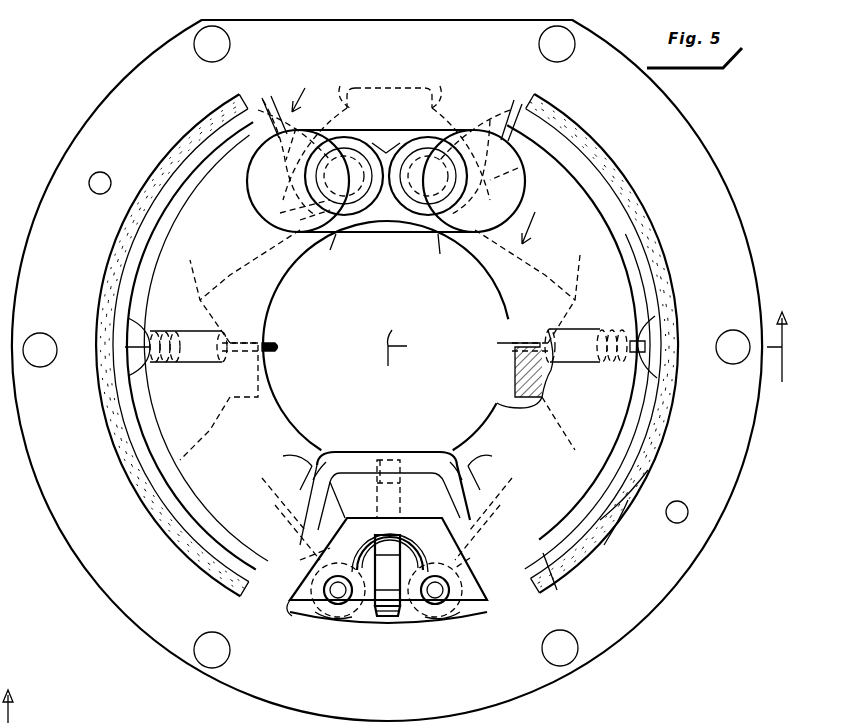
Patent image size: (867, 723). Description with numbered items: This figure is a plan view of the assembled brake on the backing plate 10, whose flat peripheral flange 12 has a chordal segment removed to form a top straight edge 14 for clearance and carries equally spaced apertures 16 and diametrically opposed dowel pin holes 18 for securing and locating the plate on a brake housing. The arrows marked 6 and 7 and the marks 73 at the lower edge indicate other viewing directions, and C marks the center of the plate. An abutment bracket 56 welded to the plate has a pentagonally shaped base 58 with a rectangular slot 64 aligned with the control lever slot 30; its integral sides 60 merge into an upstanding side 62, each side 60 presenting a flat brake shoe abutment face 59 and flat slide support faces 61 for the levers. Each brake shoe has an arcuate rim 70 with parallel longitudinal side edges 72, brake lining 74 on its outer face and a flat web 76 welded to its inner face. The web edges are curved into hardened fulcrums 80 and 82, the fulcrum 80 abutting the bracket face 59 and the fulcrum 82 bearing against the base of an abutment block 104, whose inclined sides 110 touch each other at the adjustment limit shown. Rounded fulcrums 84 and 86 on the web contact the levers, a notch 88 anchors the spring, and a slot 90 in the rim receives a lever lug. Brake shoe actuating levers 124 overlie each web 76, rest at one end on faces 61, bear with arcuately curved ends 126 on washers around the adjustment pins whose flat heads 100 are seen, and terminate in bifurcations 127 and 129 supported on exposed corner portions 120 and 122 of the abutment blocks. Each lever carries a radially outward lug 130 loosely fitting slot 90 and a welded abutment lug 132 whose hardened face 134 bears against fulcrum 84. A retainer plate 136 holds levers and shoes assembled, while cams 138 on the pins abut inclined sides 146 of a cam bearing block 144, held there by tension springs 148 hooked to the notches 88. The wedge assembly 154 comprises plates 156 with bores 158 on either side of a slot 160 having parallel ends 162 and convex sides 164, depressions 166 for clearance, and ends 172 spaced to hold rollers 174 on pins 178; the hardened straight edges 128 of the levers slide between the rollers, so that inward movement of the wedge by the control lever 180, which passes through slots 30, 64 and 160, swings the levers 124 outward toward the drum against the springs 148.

The backing plate 10 is at (730, 146).
The flat peripheral flange 12 is at (514, 720).
The top straight edge 14 is at (455, 21).
The apertures 16 is at (44, 334).
The dowel pin holes 18 is at (676, 524).
The section line 6- 6 is at (395, 517).
The view arrows 7 is at (418, 165).
The control lever slot 30 is at (400, 453).
The abutment bracket 56 is at (437, 439).
The pentagonally shaped base 58 is at (440, 488).
The brake shoe abutment face 59 is at (285, 515).
The bracket sides 60 is at (328, 466).
The slide support faces 61 is at (273, 530).
The upstanding side 62 is at (362, 456).
The rectangular slot 64 is at (402, 502).
The arcuate rim 70 is at (648, 470).
The longitudinal side edges 72 is at (620, 513).
The section line 73 is at (404, 718).
The brake lining 74 is at (173, 540).
The web 76 is at (276, 306).
The end abutment fulcrum 80 is at (311, 467).
The end abutment fulcrum 82 is at (300, 230).
The lever contacting fulcrum 84 is at (230, 395).
The lever contacting fulcrum 86 is at (258, 320).
The notch 88 is at (128, 330).
The slot 90 is at (110, 427).
The flat head 100 is at (354, 184).
The brake shoe abutment block 104 is at (420, 124).
The inclined straight sides 110 is at (398, 128).
The exposed corner portion 120 is at (386, 255).
The exposed corner portion 122 is at (490, 135).
The brake shoe actuating lever 124 is at (510, 318).
The arcuately curved end 126 is at (300, 181).
The bifurcation 127 is at (345, 232).
The straight edge 128 is at (340, 515).
The bifurcation 129 is at (306, 133).
The lug 130 is at (133, 398).
The brake web abutment lug 132 is at (515, 374).
The hardened bearing face 134 is at (220, 370).
The retainer plate 136 is at (280, 213).
The cam 138 is at (300, 220).
The cam bearing block 144 is at (378, 86).
The inclined sides 146 is at (386, 134).
The tension spring 148 is at (175, 330).
The actuating wedge assembly 154 is at (320, 630).
The truncated triangular plate 156 is at (380, 483).
The bores 158 is at (327, 565).
The slot 160 is at (412, 623).
The parallel ends 162 is at (383, 575).
The convex sides 164 is at (352, 617).
The depression 166 is at (367, 535).
The ends 172 is at (300, 607).
The rollers 174 is at (320, 618).
The pins 178 is at (324, 592).
The control lever 180 is at (388, 617).
The center C is at (398, 339).